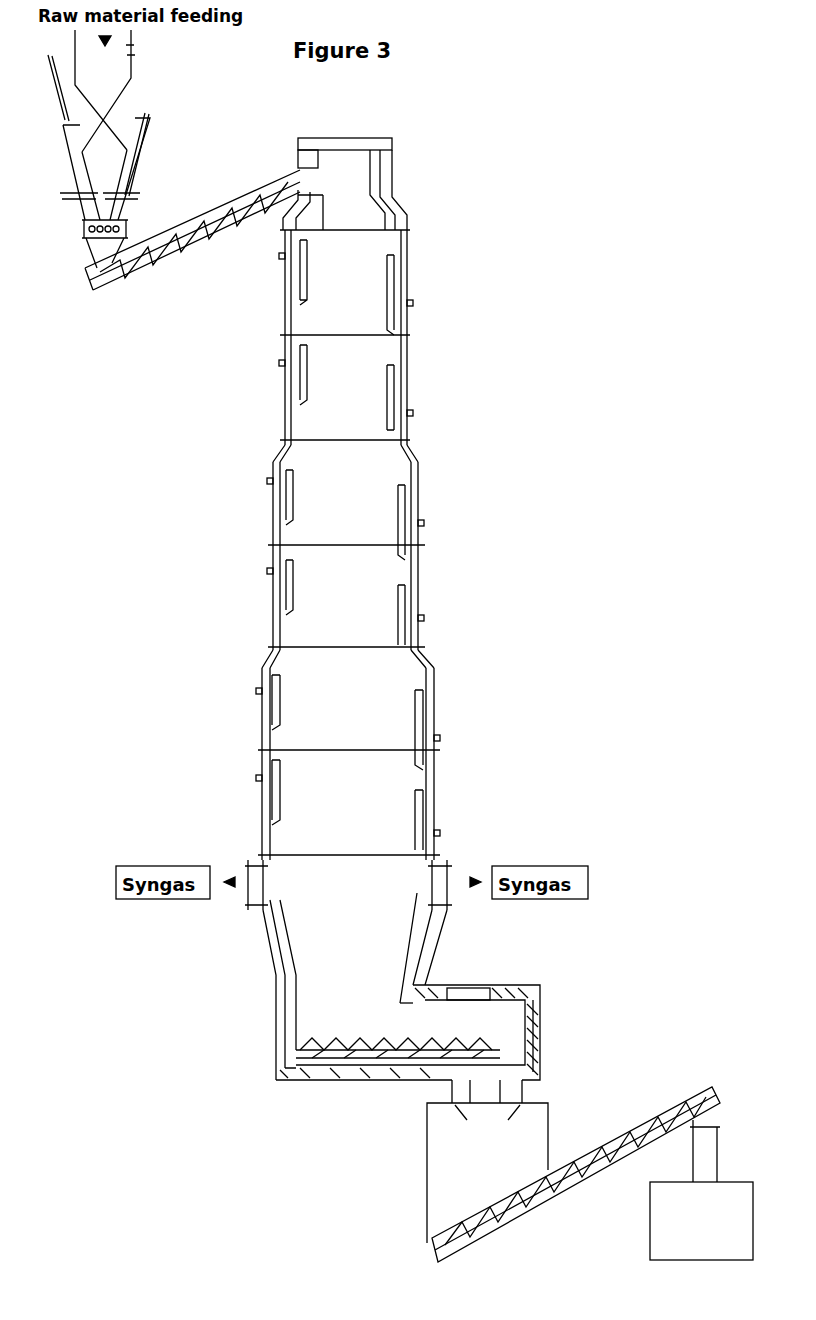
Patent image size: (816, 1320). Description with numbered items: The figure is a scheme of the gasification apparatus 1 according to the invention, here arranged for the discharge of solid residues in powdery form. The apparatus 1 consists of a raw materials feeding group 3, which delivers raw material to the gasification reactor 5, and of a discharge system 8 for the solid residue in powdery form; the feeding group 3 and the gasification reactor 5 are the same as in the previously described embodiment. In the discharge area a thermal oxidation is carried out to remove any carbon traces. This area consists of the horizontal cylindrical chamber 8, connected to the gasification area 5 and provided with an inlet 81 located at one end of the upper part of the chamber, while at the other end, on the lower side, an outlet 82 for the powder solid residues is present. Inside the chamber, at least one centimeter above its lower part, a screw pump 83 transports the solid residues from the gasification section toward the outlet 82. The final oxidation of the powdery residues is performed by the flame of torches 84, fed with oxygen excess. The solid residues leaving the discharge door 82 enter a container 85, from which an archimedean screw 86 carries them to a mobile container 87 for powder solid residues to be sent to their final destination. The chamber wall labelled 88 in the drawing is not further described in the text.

The apparatus 1 is at (393, 200).
The raw materials feeding group 3 is at (113, 103).
The gasification reactor 5 is at (503, 430).
The discharge system of the solid residue in powdery form 8 is at (521, 960).
The inlet 81 is at (420, 973).
The outlet 82 is at (490, 1092).
The screw pump 83 is at (296, 1050).
The torches 84 is at (497, 989).
The container 85 is at (427, 1163).
The archimedean screw 86 is at (632, 1130).
The mobile container 87 is at (650, 1215).
The discharge chamber wall 88 is at (520, 1020).